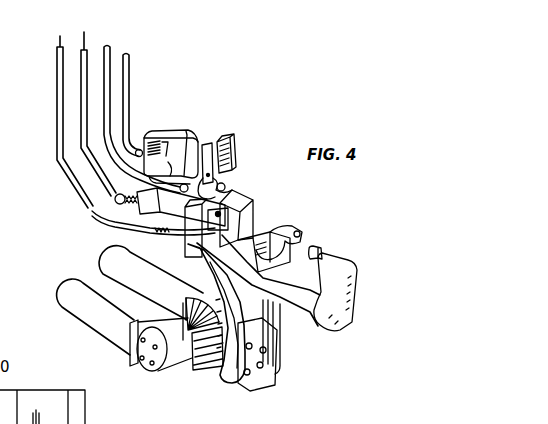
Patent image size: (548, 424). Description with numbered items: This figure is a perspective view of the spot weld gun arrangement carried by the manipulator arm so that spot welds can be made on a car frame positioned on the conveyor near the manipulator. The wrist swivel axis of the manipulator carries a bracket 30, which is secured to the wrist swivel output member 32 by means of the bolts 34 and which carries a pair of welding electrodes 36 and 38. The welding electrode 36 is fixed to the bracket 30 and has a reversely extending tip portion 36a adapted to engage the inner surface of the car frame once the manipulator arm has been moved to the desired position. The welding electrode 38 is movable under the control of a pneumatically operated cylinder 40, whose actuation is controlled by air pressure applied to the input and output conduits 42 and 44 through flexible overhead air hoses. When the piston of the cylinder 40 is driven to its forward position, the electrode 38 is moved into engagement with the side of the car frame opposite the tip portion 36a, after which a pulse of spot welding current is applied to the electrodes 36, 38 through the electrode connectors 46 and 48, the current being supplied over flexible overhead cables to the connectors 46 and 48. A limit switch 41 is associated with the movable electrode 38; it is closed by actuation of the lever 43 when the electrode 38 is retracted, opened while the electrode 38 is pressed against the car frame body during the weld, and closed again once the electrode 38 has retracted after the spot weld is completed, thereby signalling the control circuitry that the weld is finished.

The bracket 30 is at (281, 330).
The wrist swivel output member 32 is at (209, 367).
The bolts 34 is at (262, 376).
The welding electrode 36 is at (296, 275).
The tip portion 36a is at (319, 246).
The welding electrode 38 is at (290, 226).
The pneumatically operated cylinder 40 is at (173, 150).
The limit switch 41 is at (234, 148).
The input conduit 42 is at (190, 156).
The lever 43 is at (233, 176).
The output conduit 44 is at (137, 148).
The electrode connector 46 is at (97, 212).
The electrode connector 48 is at (233, 220).